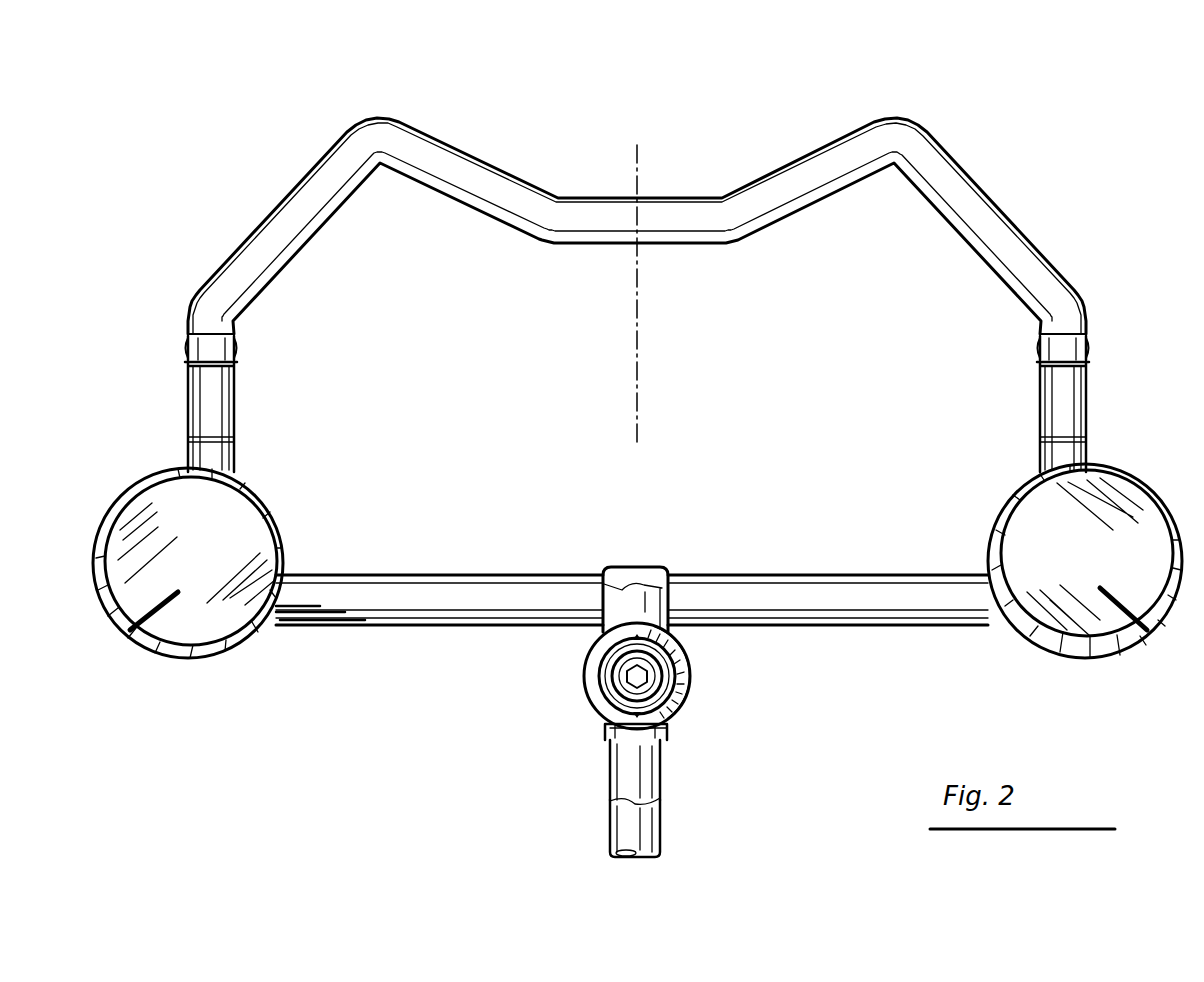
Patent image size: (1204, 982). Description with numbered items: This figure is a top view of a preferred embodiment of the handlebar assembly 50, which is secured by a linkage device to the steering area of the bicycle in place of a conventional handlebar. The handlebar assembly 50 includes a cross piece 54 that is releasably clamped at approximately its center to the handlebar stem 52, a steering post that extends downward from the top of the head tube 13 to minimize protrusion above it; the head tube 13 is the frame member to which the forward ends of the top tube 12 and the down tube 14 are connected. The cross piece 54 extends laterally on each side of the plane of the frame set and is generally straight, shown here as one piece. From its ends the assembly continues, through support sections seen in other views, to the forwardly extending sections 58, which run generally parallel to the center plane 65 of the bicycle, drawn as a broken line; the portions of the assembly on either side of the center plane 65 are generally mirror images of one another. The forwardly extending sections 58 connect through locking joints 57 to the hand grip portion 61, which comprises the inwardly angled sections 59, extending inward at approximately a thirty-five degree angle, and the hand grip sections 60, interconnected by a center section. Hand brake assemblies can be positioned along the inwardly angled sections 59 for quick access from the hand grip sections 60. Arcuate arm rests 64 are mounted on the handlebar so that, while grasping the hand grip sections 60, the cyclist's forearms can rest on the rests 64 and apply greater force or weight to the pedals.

The hand grip portion 61 is at (612, 92).
The hand grip sections 60 is at (447, 147).
The inwardly angled sections 59 is at (310, 243).
The locking joints 57 is at (237, 345).
The forwardly extending sections 58 is at (240, 397).
The arm rests 64 is at (270, 483).
The center plane 65 is at (645, 330).
The handlebar assembly 50 is at (637, 505).
The cross piece 54 is at (447, 582).
The handlebar stem 52 is at (695, 556).
The head tube 13 is at (585, 690).
The top tube 12 is at (662, 768).
The down tube 14 is at (662, 834).